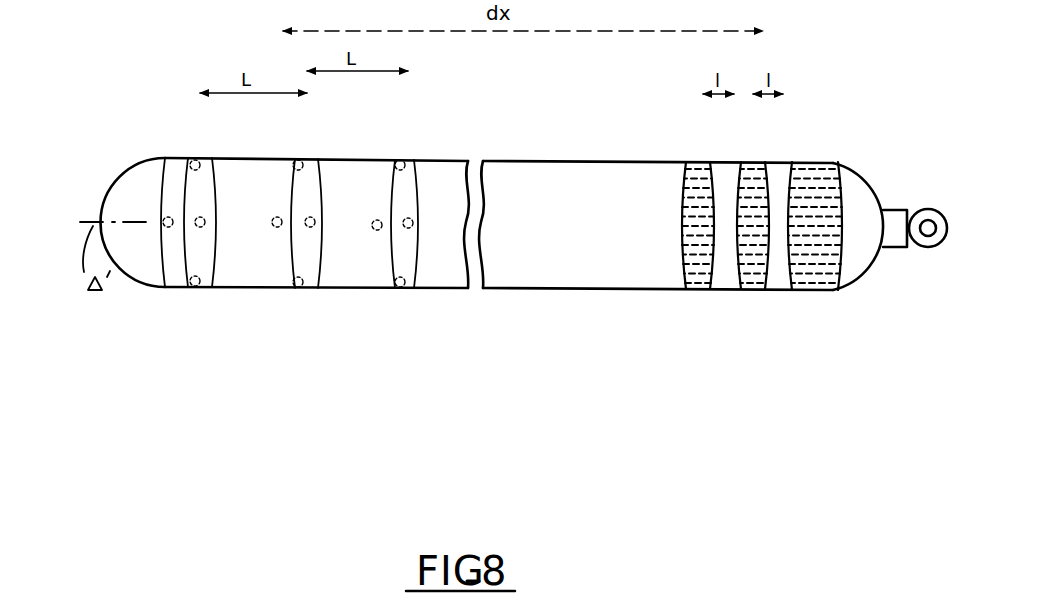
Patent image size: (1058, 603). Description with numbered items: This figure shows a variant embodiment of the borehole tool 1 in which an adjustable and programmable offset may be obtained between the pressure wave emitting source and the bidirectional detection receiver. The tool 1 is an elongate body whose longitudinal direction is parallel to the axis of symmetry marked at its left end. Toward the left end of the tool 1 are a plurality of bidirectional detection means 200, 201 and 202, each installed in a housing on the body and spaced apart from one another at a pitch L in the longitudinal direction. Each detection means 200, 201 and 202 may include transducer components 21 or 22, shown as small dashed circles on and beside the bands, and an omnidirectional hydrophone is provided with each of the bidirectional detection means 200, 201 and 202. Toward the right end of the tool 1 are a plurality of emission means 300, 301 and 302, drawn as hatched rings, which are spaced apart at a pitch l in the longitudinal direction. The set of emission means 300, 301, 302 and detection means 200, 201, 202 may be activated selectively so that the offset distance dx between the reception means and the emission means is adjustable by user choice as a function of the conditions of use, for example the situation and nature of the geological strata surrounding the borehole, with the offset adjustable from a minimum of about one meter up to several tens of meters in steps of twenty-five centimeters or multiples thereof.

The tool 1 is at (604, 176).
The bidirectional detection means 200 is at (193, 256).
The bidirectional detection means 201 is at (308, 280).
The bidirectional detection means 202 is at (408, 229).
The transducer component 21 is at (308, 260).
The transducer component 22 is at (268, 235).
The emission means 300 is at (683, 305).
The emission means 301 is at (739, 305).
The emission means 302 is at (808, 305).